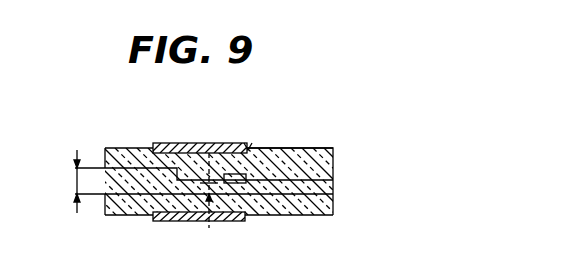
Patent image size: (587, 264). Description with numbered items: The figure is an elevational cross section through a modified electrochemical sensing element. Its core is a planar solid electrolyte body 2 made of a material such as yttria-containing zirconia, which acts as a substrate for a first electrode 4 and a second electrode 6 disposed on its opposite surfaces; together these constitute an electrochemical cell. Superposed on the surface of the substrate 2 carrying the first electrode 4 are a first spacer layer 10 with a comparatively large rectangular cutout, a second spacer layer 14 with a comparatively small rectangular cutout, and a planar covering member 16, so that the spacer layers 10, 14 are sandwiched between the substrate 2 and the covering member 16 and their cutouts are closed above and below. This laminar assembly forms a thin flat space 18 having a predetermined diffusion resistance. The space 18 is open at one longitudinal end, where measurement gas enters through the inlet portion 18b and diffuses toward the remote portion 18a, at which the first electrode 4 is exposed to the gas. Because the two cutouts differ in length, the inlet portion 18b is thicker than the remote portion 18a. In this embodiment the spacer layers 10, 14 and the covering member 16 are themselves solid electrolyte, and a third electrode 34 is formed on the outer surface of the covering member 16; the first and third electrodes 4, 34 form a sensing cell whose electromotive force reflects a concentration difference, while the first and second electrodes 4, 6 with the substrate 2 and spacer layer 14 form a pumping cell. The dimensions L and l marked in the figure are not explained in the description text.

The planar solid electrolyte body 2 is at (330, 153).
The first electrode 4 is at (252, 150).
The second electrode 6 is at (184, 146).
The first spacer layer 10 is at (330, 188).
The second spacer layer 14 is at (330, 175).
The covering member 16 is at (330, 207).
The thin flat space 18 is at (152, 180).
The remote portion 18a is at (237, 184).
The inlet portion 18b is at (121, 181).
The third electrode 34 is at (173, 221).
The slot height dimension L is at (77, 181).
The length dimension l is at (209, 203).